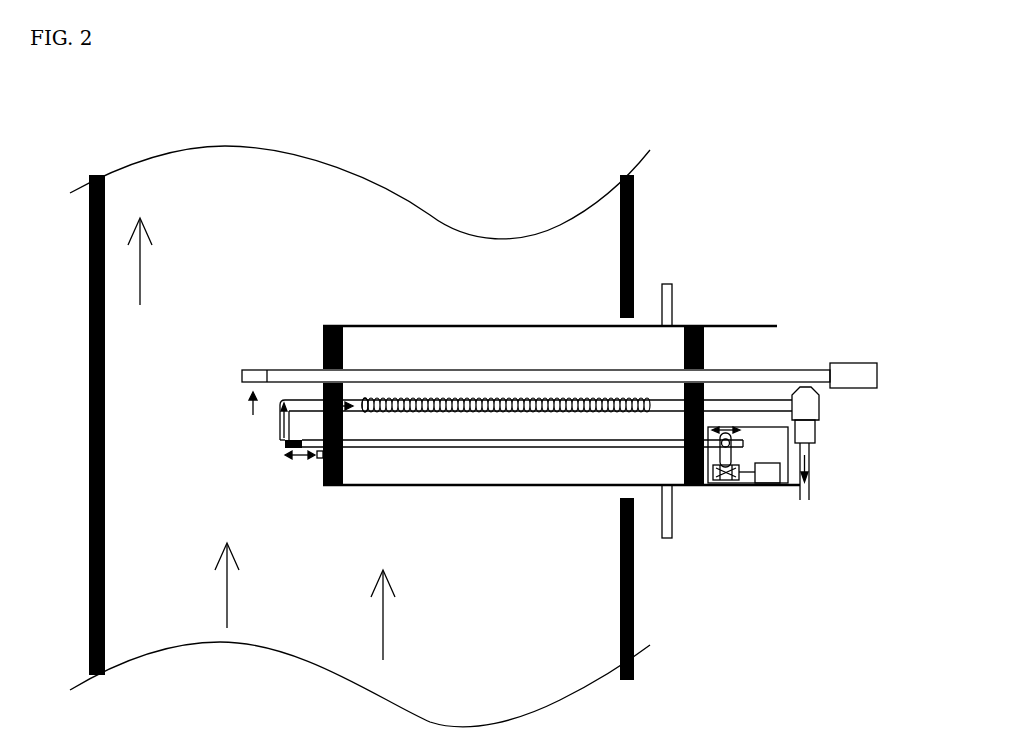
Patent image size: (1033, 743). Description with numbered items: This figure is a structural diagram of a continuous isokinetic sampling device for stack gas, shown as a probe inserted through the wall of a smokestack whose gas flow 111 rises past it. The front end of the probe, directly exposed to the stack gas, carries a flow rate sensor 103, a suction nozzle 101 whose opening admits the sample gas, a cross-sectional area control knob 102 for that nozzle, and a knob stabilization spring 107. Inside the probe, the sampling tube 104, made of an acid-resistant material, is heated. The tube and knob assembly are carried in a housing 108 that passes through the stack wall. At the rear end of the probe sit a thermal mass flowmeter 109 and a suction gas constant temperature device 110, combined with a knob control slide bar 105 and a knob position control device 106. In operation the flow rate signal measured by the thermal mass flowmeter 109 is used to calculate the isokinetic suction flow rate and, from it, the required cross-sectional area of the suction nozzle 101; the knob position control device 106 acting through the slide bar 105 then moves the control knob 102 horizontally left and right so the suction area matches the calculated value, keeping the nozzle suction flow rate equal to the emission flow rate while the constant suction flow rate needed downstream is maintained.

The suction nozzle 101 is at (280, 440).
The cross-sectional area control knob 102 is at (284, 447).
The flow rate sensor 103 is at (256, 366).
The sampling tube 104 is at (445, 397).
The knob control slide bar 105 is at (730, 487).
The knob position control device 106 is at (768, 487).
The knob stabilization spring 107 is at (319, 460).
The housing 108 is at (745, 400).
The thermal mass flowmeter 109 is at (853, 363).
The suction gas constant temperature device 110 is at (820, 431).
The gas flow 111 is at (385, 613).